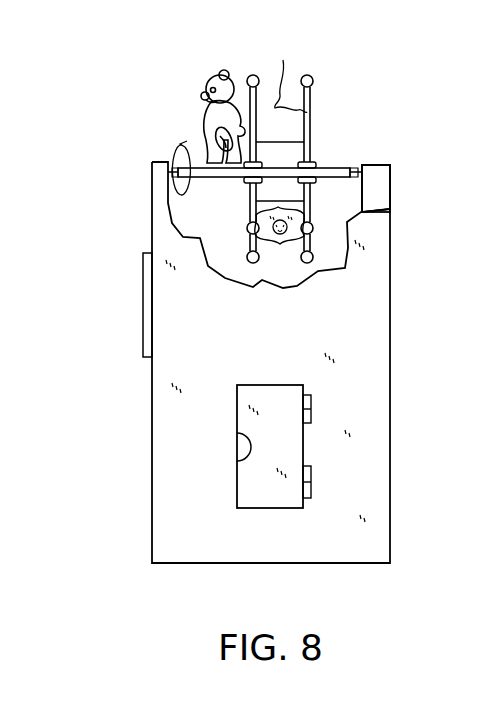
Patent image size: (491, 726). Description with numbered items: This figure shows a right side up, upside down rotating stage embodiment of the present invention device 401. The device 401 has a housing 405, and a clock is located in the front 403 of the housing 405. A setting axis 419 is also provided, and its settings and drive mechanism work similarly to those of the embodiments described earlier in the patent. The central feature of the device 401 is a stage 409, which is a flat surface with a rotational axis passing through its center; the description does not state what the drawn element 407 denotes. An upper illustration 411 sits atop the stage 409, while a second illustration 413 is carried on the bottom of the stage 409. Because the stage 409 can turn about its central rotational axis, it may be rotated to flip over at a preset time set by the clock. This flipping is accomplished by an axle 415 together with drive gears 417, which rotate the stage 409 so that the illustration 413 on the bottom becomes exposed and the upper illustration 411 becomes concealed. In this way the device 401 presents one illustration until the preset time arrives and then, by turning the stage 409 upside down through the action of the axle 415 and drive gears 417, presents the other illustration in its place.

The present invention device 401 is at (159, 56).
The front 403 is at (148, 446).
The housing 405 is at (197, 553).
The platform bar 407 is at (356, 214).
The stage 409 is at (330, 166).
The upper illustration 411 is at (272, 88).
The illustration 413 is at (277, 245).
The axle 415 is at (355, 166).
The drive gears 417 is at (383, 199).
The setting axis 419 is at (295, 450).
The element clock is at (143, 312).